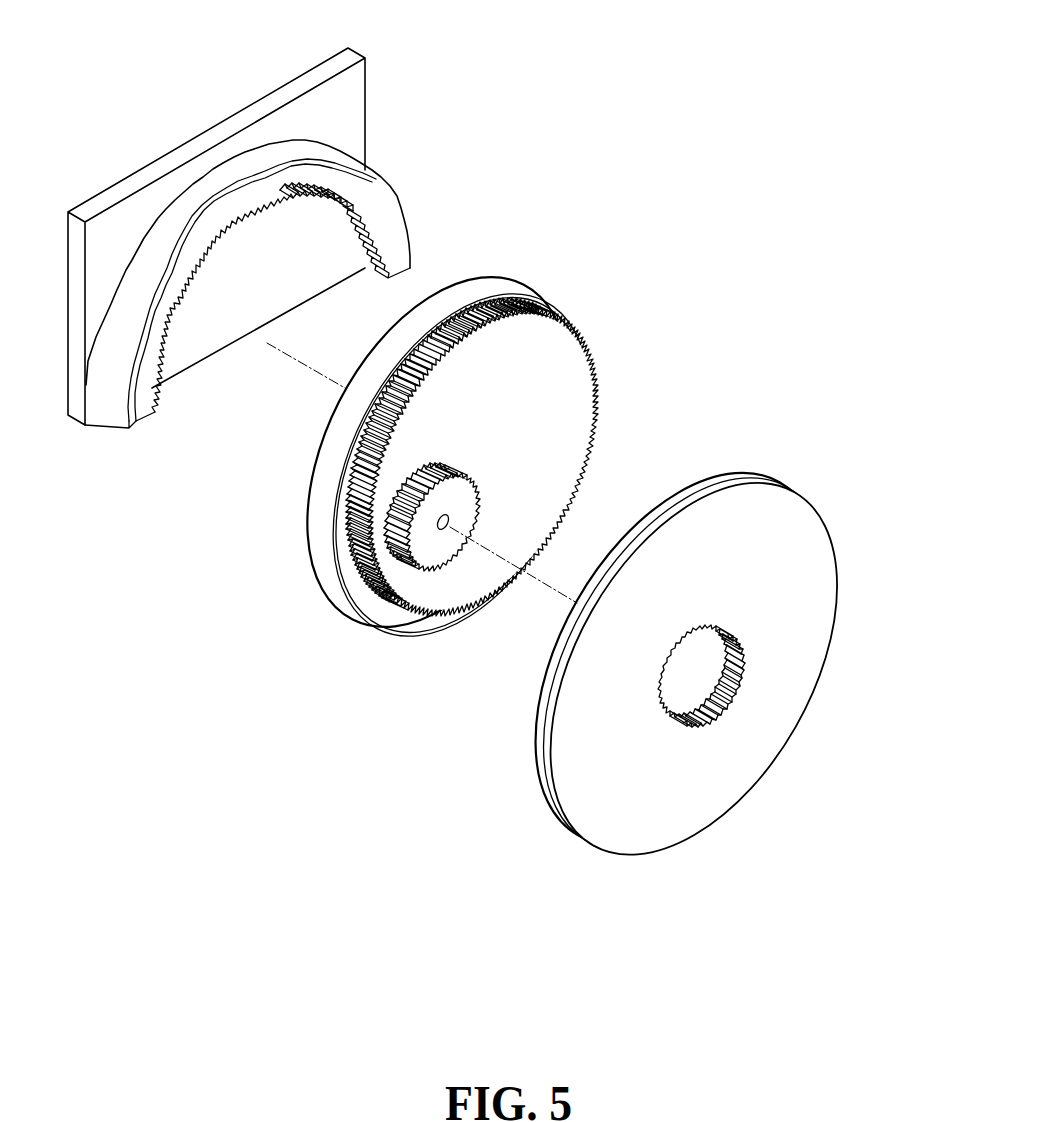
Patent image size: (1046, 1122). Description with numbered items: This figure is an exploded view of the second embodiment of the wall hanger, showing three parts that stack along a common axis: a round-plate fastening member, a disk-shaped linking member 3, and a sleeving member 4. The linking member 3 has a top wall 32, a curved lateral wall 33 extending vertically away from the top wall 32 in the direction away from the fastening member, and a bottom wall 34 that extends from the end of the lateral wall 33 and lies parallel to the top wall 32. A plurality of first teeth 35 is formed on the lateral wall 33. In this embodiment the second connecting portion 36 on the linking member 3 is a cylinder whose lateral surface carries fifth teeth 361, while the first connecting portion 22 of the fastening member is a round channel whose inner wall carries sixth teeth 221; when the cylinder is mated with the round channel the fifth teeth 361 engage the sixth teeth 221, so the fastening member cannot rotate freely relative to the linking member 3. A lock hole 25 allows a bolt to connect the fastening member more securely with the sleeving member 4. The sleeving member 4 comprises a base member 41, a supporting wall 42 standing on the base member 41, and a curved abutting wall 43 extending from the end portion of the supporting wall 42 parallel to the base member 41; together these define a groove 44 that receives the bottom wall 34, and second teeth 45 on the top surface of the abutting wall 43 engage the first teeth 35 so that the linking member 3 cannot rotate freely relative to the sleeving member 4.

The sleeving member 4 is at (280, 270).
The base member 41 is at (108, 220).
The supporting wall 42 is at (246, 163).
The abutting wall 43 is at (388, 220).
The groove 44 is at (362, 235).
The second teeth 45 is at (180, 322).
The linking member 3 is at (451, 458).
The top wall 32 is at (558, 380).
The lateral wall 33 is at (345, 555).
The bottom wall 34 is at (558, 313).
The first teeth 35 is at (358, 573).
The pinion 36 is at (420, 588).
The fifth teeth 361 is at (392, 560).
The lock hole 25 is at (451, 519).
The first connecting portion 22 is at (689, 663).
The sixth teeth 221 is at (735, 683).